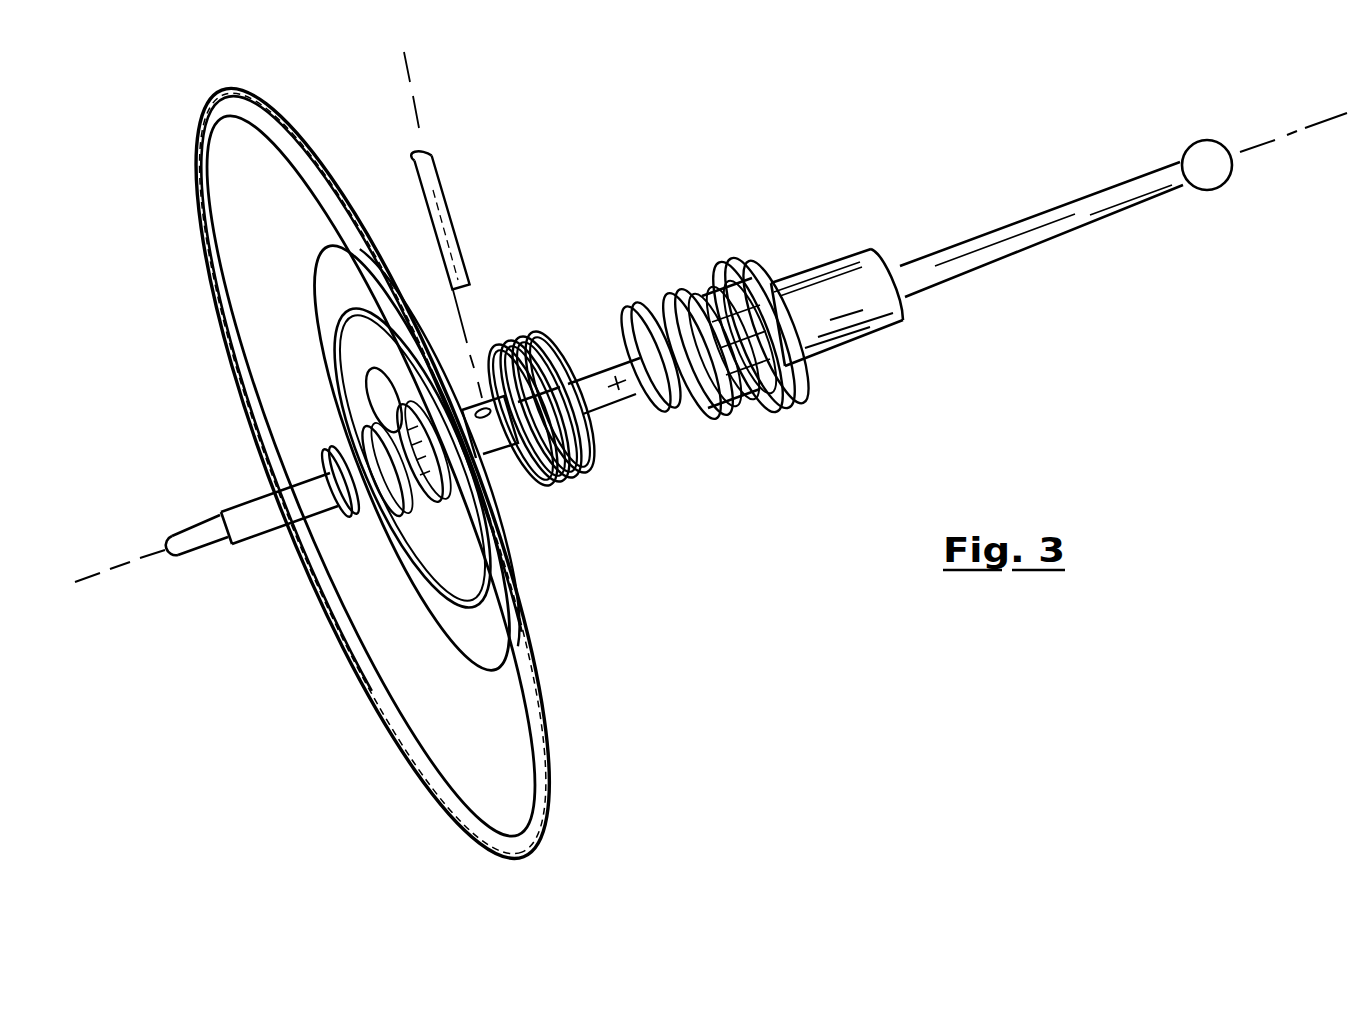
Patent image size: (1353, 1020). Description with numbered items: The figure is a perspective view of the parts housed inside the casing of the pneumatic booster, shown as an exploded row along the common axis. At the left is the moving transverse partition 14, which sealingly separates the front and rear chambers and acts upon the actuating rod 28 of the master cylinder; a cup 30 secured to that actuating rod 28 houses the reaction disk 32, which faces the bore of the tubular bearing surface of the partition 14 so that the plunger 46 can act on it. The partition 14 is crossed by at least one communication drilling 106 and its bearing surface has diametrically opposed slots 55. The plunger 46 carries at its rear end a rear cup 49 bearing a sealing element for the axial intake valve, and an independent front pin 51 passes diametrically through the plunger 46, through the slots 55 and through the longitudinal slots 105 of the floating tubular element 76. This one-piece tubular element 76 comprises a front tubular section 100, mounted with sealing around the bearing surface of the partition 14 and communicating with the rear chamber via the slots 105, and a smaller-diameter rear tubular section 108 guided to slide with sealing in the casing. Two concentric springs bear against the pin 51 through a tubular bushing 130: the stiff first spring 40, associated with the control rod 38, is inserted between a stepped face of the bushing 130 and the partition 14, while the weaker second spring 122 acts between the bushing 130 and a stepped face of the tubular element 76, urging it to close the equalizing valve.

The transverse partition 14 is at (276, 193).
The actuating rod 28 is at (250, 523).
The cup 30 is at (342, 457).
The reaction disk 32 is at (386, 524).
The communication drilling 106 is at (370, 403).
The rear tubular section 108 is at (871, 329).
The front pin 51 is at (442, 181).
The diametrically opposed slots 55 is at (483, 406).
The first spring 40 is at (531, 338).
The plunger 46 is at (621, 399).
The rear cup 49 is at (637, 336).
The front tubular section 100 is at (684, 419).
The longitudinal slots 105 is at (770, 294).
The second spring 122 is at (684, 293).
The tubular bushing 130 is at (798, 382).
The floating tubular element 76 is at (856, 284).
The control rod 38 is at (1012, 245).